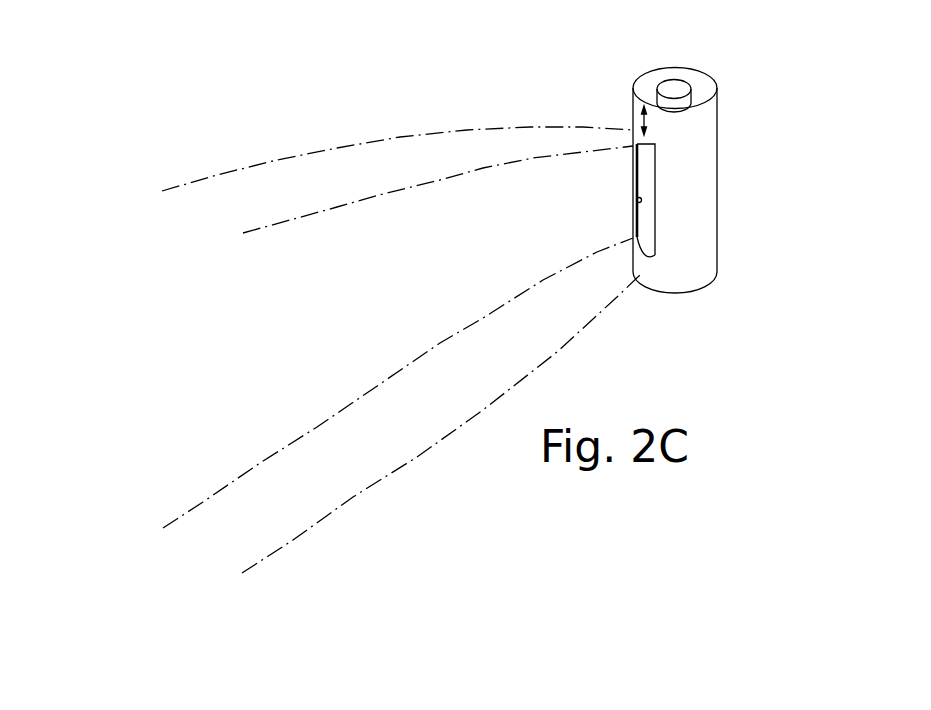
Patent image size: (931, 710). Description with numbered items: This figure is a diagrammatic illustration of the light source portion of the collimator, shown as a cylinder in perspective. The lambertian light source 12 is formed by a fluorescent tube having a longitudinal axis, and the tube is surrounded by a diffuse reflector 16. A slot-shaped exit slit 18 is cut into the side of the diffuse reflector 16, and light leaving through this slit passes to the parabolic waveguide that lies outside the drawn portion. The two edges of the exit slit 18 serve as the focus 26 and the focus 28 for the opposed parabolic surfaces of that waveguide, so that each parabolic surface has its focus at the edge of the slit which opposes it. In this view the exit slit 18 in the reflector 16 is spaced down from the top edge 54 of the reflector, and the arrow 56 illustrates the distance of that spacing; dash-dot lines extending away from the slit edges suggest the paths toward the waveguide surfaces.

The lambertian light source 12 is at (675, 86).
The diffuse reflector 16 is at (712, 103).
The exit slit 18 is at (642, 177).
The focus 26 is at (658, 183).
The focus 28 is at (635, 207).
The top edge 54 is at (644, 106).
The arrow 56 is at (644, 122).